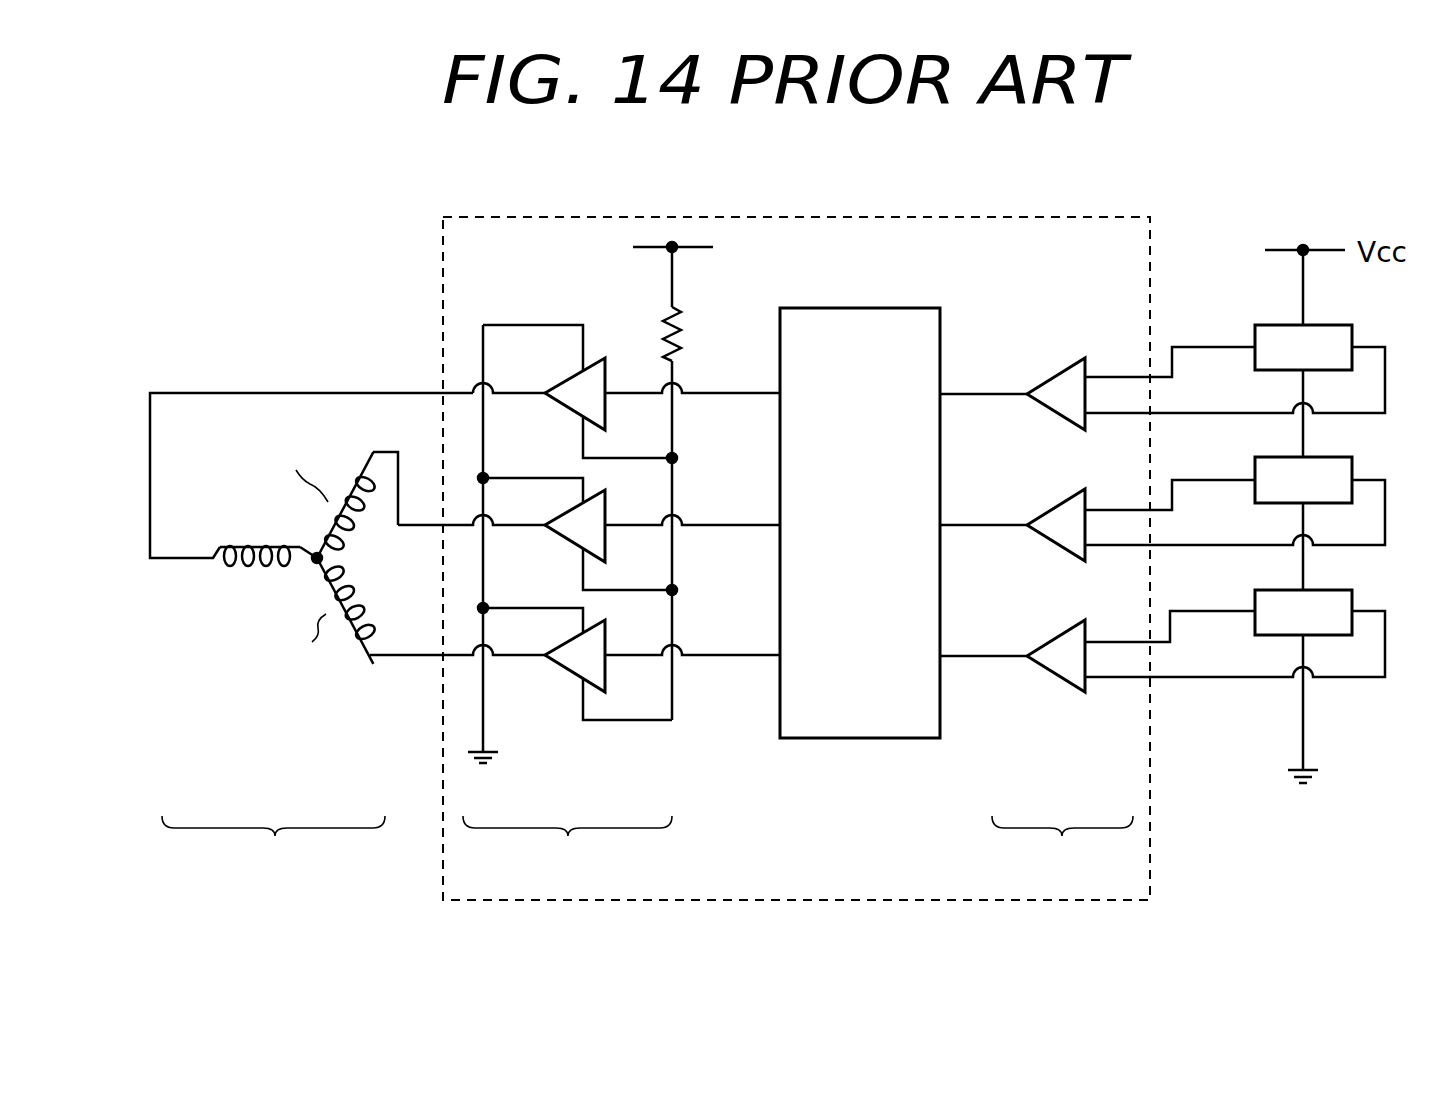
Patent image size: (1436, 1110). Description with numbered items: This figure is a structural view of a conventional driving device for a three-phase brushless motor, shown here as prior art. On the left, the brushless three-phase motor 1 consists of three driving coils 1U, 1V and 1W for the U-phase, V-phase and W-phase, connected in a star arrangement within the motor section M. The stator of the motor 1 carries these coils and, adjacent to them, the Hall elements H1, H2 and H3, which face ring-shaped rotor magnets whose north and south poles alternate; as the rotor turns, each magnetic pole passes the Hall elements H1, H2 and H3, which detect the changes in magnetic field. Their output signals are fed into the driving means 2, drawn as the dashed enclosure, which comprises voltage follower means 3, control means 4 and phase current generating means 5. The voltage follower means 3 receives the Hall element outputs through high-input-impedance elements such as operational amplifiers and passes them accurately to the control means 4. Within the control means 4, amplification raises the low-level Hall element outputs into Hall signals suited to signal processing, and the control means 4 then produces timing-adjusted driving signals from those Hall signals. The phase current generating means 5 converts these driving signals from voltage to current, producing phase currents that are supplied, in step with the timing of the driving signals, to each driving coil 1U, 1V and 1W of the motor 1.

The brushless three-phase motor 1 is at (311, 546).
The U-phase driving coil 1U is at (250, 574).
The V-phase driving coil 1V is at (354, 514).
The W-phase driving coil 1W is at (352, 600).
The driving means 2 is at (1050, 217).
The voltage follower means 3 is at (1036, 614).
The control means 4 is at (831, 740).
The phase current generating means 5 is at (589, 553).
The motor section M is at (273, 842).
The Hall element H1 is at (1235, 369).
The Hall element H2 is at (1235, 501).
The Hall element H3 is at (1235, 633).